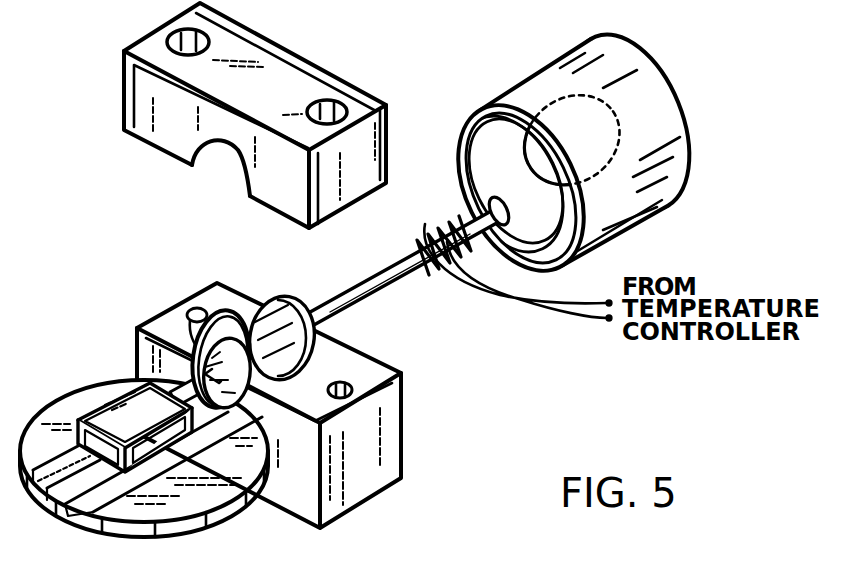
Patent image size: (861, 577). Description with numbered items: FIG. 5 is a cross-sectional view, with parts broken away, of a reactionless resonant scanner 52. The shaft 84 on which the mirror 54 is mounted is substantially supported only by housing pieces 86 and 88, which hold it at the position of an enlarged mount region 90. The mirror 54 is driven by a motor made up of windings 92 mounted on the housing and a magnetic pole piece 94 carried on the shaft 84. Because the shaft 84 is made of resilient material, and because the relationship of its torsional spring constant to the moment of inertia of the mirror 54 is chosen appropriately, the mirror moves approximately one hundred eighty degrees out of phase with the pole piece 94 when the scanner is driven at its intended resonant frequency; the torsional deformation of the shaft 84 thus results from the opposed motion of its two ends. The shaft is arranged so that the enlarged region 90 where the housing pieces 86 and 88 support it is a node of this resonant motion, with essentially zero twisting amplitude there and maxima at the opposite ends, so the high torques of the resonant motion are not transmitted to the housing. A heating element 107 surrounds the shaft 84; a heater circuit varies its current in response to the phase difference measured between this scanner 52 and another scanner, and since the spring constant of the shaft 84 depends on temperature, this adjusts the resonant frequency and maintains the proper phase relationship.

The scanner 52 is at (665, 33).
The mirror 54 is at (195, 532).
The shaft 84 is at (366, 286).
The housing piece 86 is at (392, 436).
The housing piece 88 is at (280, 62).
The enlarged mount region 90 is at (290, 306).
The windings 92 is at (468, 122).
The magnetic pole piece 94 is at (590, 150).
The heating element 107 is at (434, 231).